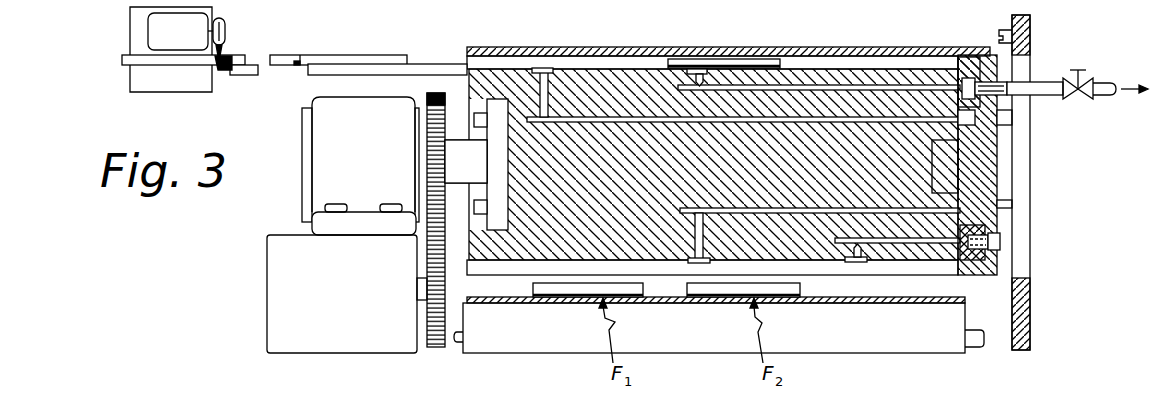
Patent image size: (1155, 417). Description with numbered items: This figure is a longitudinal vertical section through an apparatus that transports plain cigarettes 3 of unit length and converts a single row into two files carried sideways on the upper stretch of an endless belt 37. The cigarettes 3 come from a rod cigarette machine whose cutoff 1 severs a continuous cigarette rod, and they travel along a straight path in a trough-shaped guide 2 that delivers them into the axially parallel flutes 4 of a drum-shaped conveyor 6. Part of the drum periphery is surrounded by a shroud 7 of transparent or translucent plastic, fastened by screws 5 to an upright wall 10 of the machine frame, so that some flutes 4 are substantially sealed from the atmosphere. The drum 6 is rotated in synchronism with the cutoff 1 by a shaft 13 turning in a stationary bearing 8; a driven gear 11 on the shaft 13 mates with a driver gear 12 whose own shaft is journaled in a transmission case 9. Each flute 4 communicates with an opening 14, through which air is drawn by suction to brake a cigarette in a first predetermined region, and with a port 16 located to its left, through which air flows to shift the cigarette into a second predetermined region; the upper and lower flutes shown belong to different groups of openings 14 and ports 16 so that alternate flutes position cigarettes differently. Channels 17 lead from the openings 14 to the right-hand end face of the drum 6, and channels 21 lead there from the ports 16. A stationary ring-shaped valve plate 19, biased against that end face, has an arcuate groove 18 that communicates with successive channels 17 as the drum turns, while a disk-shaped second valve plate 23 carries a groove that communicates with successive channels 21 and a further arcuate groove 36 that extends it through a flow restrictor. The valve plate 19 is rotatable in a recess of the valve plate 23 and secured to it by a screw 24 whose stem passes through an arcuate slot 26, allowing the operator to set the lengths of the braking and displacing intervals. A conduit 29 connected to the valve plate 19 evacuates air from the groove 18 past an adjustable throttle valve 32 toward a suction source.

The cutoff 1 is at (150, 24).
The trough-shaped guide 2 is at (250, 74).
The plain cigarettes 3 is at (226, 56).
The flutes 4 is at (590, 63).
The screws 5 is at (998, 33).
The conveyor drum 6 is at (478, 86).
The shroud 7 is at (518, 52).
The stationary bearing 8 is at (337, 139).
The transmission case 9 is at (290, 262).
The upright wall 10 is at (1027, 290).
The driven gear 11 is at (428, 100).
The driver gear 12 is at (437, 320).
The shaft 13 is at (457, 165).
The openings 14 is at (707, 67).
The ports 16 is at (545, 68).
The channels 17 is at (797, 88).
The arcuate groove 18 is at (962, 80).
The ring-shaped valve plate 19 is at (960, 73).
The channels 21 is at (835, 120).
The disk-shaped valve plate 23 is at (975, 175).
The screw 24 is at (1003, 241).
The arcuate slot 26 is at (990, 228).
The conduit 29 is at (1043, 83).
The adjustable throttle valve 32 is at (1090, 82).
The arcuate groove 36 is at (966, 120).
The endless belt 37 is at (513, 302).